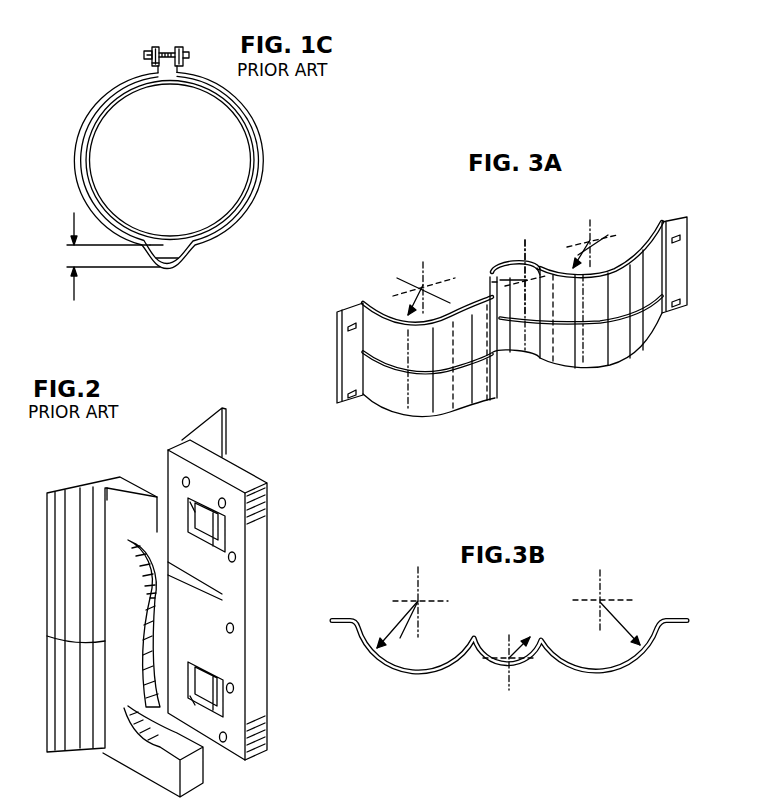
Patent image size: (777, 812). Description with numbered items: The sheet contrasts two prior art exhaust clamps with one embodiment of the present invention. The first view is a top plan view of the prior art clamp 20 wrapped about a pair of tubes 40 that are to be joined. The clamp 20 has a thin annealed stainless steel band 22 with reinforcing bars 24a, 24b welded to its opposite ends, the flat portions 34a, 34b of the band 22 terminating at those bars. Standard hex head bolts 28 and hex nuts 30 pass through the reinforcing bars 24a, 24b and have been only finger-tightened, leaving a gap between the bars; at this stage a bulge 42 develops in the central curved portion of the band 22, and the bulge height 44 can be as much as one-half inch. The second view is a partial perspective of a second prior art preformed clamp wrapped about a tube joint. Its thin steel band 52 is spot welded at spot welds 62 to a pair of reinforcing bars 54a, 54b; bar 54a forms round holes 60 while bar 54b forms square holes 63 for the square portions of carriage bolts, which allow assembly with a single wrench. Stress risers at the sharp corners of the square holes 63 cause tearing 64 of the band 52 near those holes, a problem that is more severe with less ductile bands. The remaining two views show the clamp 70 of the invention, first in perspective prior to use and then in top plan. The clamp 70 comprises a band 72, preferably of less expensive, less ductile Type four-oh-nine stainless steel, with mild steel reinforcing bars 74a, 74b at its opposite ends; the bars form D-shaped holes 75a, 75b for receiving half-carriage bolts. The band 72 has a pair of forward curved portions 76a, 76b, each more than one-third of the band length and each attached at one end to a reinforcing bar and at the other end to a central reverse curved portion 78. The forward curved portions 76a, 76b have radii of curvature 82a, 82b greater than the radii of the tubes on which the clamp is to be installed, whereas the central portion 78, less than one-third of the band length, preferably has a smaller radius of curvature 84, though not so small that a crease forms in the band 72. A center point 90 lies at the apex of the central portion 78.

In FIG. 1C, the prior art clamp 20 is at (270, 170).
In FIG. 1C, the band 22 is at (258, 136).
In FIG. 1C, the reinforcing bar 24a is at (157, 64).
In FIG. 1C, the reinforcing bar 24b is at (174, 70).
In FIG. 1C, the hex head bolts 28 is at (148, 53).
In FIG. 1C, the hex nuts 30 is at (185, 53).
In FIG. 1C, the flat portion 34a is at (93, 111).
In FIG. 1C, the flat portion 34b is at (238, 100).
In FIG. 1C, the tubes 40 is at (165, 244).
In FIG. 1C, the bulge 42 is at (170, 267).
In FIG. 1C, the bulge height 44 is at (111, 269).
In FIG. 2, the thin steel band 52 is at (221, 410).
In FIG. 2, the reinforcing bar 54a is at (128, 490).
In FIG. 2, the reinforcing bar 54b is at (235, 478).
In FIG. 2, the round holes 60 is at (133, 547).
In FIG. 2, the spot welds 62 is at (183, 478).
In FIG. 2, the square holes 63 is at (216, 538).
In FIG. 2, the tearing 64 is at (180, 487).
In FIG. 3A, the clamp 70 is at (607, 223).
In FIG. 3B, the clamp 70 is at (378, 618).
In FIG. 3A, the band 72 is at (494, 282).
In FIG. 3B, the band 72 is at (557, 645).
In FIG. 3A, the reinforcing bar 74a is at (340, 325).
In FIG. 3B, the reinforcing bar 74a is at (338, 626).
In FIG. 3A, the reinforcing bar 74b is at (667, 220).
In FIG. 3B, the reinforcing bar 74b is at (677, 626).
In FIG. 3A, the D-shaped hole 75a is at (350, 327).
In FIG. 3A, the D-shaped hole 75b is at (678, 236).
In FIG. 3A, the forward curved portion 76a is at (472, 404).
In FIG. 3B, the forward curved portion 76a is at (410, 677).
In FIG. 3A, the forward curved portion 76b is at (640, 350).
In FIG. 3B, the forward curved portion 76b is at (602, 677).
In FIG. 3A, the central reverse curved portion 78 is at (518, 262).
In FIG. 3B, the central reverse curved portion 78 is at (522, 620).
In FIG. 3A, the radius of curvature 82a is at (412, 287).
In FIG. 3B, the radius of curvature 82a is at (412, 614).
In FIG. 3A, the radius of curvature 82b is at (590, 240).
In FIG. 3B, the radius of curvature 82b is at (600, 602).
In FIG. 3A, the radius of curvature 84 is at (523, 282).
In FIG. 3B, the radius of curvature 84 is at (509, 658).
In FIG. 3A, the center point 90 is at (500, 270).
In FIG. 3B, the center point 90 is at (512, 612).